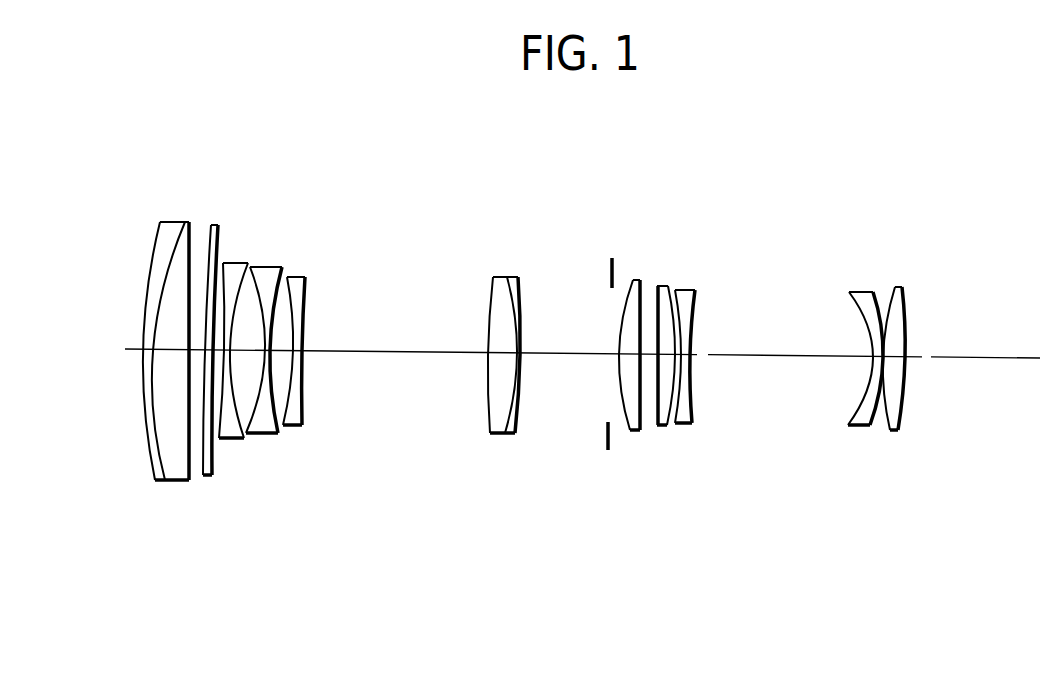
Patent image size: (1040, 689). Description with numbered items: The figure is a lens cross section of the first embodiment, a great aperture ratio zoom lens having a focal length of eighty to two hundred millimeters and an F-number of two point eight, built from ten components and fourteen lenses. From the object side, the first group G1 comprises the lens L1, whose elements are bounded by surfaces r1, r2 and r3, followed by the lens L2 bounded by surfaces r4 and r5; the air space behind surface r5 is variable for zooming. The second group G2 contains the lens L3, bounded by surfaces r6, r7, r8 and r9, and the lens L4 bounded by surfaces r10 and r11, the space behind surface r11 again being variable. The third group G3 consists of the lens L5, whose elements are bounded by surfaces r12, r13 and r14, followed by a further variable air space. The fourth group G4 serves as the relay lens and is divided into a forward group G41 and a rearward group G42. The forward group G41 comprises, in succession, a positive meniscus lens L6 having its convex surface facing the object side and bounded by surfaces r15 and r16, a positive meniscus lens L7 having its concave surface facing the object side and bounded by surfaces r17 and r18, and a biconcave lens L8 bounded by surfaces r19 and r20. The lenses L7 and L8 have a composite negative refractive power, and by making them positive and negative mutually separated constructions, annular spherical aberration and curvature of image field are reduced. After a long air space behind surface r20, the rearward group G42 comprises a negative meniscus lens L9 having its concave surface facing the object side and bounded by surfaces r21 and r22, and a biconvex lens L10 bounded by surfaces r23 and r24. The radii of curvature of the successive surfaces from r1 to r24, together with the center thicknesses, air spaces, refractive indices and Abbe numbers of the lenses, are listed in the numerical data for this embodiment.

The first group G1 is at (225, 168).
The second group G2 is at (317, 204).
The third group G3 is at (507, 226).
The fourth group G4 is at (890, 177).
The forward group G41 is at (715, 220).
The rearward group G42 is at (905, 227).
The lens L1 is at (198, 215).
The lens L2 is at (217, 225).
The lens L3 is at (283, 254).
The lens L4 is at (302, 275).
The lens L5 is at (518, 267).
The positive meniscus lens L6 is at (638, 280).
The positive meniscus lens L7 is at (662, 286).
The biconcave lens L8 is at (685, 290).
The negative meniscus lens L9 is at (863, 292).
The biconvex lens L10 is at (900, 287).
The lens surface r1 is at (146, 459).
The lens surface r2 is at (167, 466).
The lens surface r3 is at (186, 483).
The lens surface r4 is at (201, 461).
The lens surface r5 is at (213, 461).
The lens surface r6 is at (224, 431).
The lens surface r7 is at (243, 431).
The lens surface r8 is at (260, 427).
The lens surface r9 is at (281, 426).
The lens surface r10 is at (284, 426).
The lens surface r11 is at (304, 410).
The lens surface r12 is at (492, 423).
The lens surface r13 is at (506, 422).
The lens surface r14 is at (518, 425).
The lens surface r15 is at (628, 427).
The lens surface r16 is at (641, 428).
The lens surface r17 is at (660, 426).
The lens surface r18 is at (672, 425).
The lens surface r19 is at (678, 424).
The lens surface r20 is at (693, 412).
The lens surface r21 is at (852, 414).
The lens surface r22 is at (876, 414).
The lens surface r23 is at (886, 426).
The lens surface r24 is at (903, 420).